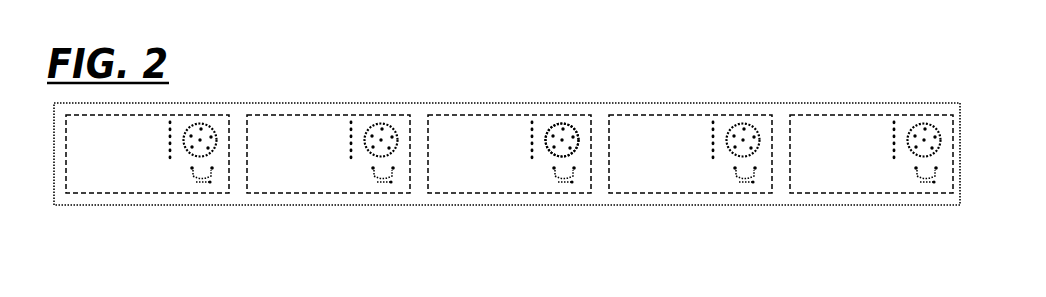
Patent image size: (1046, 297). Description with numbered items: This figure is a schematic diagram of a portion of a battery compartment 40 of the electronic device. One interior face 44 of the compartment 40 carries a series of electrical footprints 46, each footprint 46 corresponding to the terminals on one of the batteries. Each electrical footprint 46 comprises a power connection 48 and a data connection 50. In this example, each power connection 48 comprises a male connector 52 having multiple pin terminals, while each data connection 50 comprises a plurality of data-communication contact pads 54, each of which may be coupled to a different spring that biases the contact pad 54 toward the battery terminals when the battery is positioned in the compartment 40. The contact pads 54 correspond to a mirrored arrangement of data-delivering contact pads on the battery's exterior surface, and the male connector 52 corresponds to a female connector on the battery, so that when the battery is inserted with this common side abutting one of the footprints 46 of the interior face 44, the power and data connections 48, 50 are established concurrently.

The compartment 40 is at (507, 130).
The interior face 44 is at (382, 112).
The electrical footprints 46 is at (825, 193).
The power connection 48 is at (571, 124).
The data connection 50 is at (551, 175).
The male connector 52 is at (550, 126).
The data-communication contact pads 54 is at (530, 124).